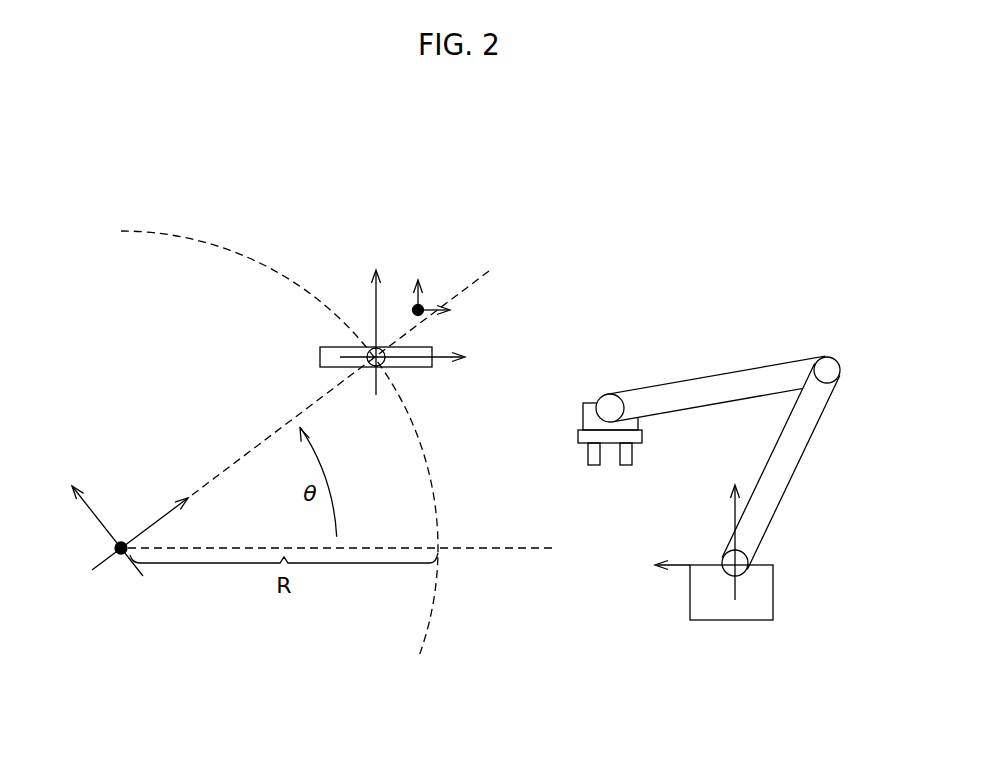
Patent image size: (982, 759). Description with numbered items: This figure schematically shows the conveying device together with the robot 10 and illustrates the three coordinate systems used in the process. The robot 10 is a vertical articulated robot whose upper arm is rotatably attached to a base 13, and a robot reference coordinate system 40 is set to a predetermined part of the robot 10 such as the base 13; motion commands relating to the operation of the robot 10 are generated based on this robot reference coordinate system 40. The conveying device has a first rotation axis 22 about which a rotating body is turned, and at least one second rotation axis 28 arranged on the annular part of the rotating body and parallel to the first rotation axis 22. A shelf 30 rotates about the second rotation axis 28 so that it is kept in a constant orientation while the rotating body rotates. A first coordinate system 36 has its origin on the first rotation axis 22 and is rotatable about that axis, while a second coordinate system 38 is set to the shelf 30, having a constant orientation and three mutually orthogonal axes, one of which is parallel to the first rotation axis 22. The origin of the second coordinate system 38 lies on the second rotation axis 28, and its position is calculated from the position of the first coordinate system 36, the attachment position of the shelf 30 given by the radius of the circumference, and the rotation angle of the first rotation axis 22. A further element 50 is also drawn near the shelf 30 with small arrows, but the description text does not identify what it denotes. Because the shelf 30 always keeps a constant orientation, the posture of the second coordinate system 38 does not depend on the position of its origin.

The robot 10 is at (709, 530).
The base 13 is at (718, 620).
The first rotation axis 22 is at (124, 556).
The second rotation axis 28 is at (376, 368).
The shelf 30 is at (320, 355).
The first coordinate system 36 is at (92, 595).
The second coordinate system 38 is at (360, 322).
The robot reference coordinate system 40 is at (695, 533).
The target point 50 is at (440, 283).